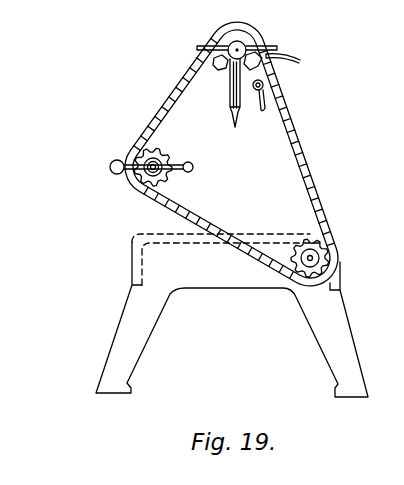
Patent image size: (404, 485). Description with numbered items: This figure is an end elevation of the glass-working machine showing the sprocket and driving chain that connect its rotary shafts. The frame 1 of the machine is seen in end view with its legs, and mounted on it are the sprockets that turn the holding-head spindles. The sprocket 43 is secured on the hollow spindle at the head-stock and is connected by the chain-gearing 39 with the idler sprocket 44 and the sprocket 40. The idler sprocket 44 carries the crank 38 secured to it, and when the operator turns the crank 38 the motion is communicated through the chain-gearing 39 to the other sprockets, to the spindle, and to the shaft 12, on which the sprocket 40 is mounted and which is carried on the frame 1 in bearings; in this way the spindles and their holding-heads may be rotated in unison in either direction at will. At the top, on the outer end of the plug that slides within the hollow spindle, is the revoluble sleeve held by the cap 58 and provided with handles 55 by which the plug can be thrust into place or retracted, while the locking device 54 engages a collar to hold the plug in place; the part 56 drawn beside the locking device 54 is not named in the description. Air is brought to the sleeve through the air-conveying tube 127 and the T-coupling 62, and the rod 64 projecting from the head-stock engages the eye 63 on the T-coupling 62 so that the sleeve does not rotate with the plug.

The frame 1 is at (232, 315).
The shaft 12 is at (322, 258).
The crank 38 is at (110, 167).
The chain-gearing 39 is at (177, 92).
The sprocket 40 is at (303, 244).
The sprocket 43 is at (214, 60).
The idler sprocket 44 is at (157, 153).
The locking device 54 is at (232, 112).
The handles 55 is at (218, 44).
The pointer rod 56 is at (232, 75).
The cap 58 is at (252, 38).
The T-coupling 62 is at (282, 72).
The eye 63 is at (265, 86).
The rod 64 is at (262, 100).
The air-conveying tube 127 is at (293, 61).